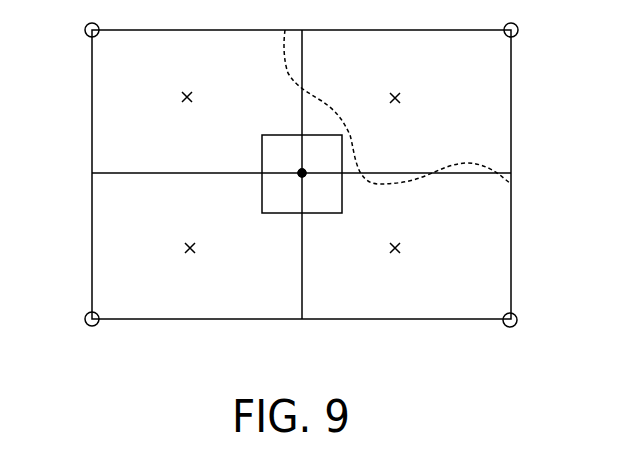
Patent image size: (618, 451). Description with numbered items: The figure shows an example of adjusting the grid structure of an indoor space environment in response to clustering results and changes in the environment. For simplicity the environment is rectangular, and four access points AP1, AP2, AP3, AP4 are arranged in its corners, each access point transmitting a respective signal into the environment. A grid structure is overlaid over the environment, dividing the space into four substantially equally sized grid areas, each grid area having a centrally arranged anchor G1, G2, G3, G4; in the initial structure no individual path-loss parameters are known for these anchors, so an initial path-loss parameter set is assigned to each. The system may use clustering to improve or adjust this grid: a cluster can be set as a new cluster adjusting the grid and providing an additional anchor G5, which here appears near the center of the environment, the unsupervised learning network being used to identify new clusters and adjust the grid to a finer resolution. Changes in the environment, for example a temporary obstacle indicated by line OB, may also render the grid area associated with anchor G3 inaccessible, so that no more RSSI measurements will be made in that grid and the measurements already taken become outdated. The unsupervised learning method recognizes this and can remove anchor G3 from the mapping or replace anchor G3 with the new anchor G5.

The access point AP1 is at (65, 328).
The access point AP2 is at (538, 328).
The access point AP3 is at (538, 36).
The access point AP4 is at (63, 35).
The grid anchor G1 is at (207, 236).
The grid anchor G2 is at (412, 236).
The grid anchor G3 is at (413, 86).
The grid anchor G4 is at (205, 85).
The additional anchor G5 is at (303, 168).
The temporary obstacle OB is at (357, 154).